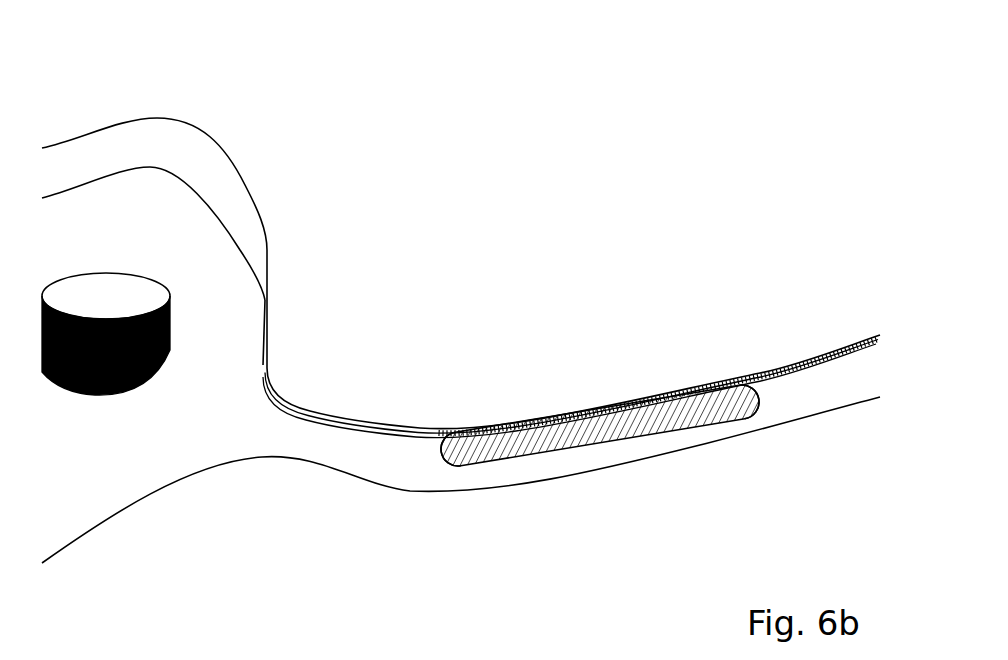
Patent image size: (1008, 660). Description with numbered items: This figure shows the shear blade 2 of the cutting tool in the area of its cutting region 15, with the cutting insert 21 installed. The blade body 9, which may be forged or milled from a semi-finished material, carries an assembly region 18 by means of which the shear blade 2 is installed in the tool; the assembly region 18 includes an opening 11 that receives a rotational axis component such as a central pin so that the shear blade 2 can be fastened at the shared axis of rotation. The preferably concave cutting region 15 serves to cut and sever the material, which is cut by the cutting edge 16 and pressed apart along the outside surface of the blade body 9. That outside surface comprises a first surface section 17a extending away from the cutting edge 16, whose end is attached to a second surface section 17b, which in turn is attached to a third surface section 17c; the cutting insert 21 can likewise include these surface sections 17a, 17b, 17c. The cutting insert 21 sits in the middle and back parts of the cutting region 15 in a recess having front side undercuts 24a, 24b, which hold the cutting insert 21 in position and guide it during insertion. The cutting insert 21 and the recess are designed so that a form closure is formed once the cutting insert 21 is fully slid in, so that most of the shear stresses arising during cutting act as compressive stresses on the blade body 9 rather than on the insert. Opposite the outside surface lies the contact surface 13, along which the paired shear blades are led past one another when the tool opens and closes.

The shear blade 2 is at (489, 60).
The blade body 9 is at (253, 340).
The opening 11 is at (103, 293).
The contact surface 13 is at (508, 506).
The cutting region 15 is at (571, 300).
The cutting edge 16 is at (659, 353).
The first surface section 17a is at (318, 410).
The second surface section 17b is at (393, 427).
The third surface section 17c is at (788, 370).
The assembly region 18 is at (265, 160).
The cutting insert 21 is at (606, 358).
The front side undercut 24a is at (458, 457).
The front side undercut 24b is at (735, 397).